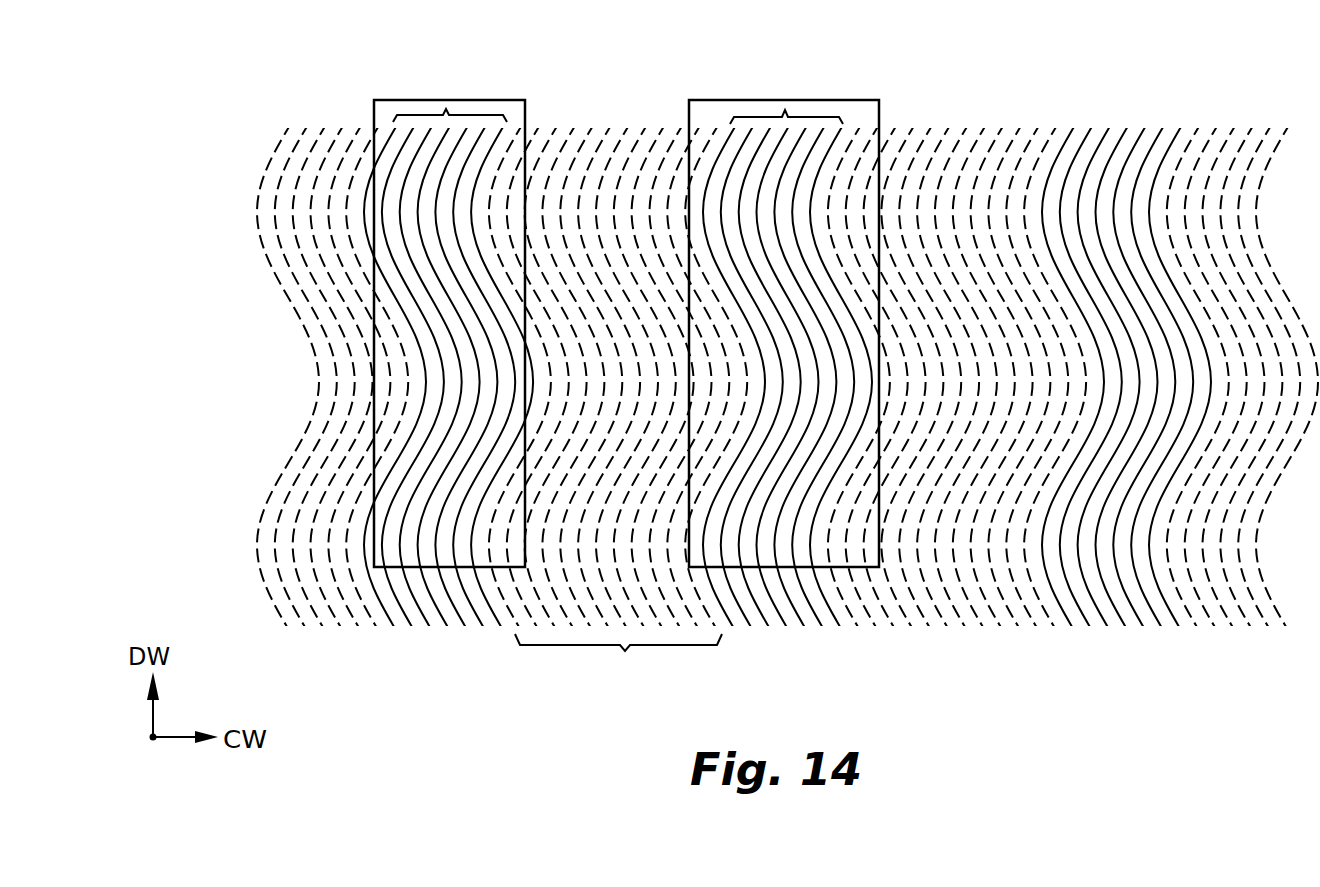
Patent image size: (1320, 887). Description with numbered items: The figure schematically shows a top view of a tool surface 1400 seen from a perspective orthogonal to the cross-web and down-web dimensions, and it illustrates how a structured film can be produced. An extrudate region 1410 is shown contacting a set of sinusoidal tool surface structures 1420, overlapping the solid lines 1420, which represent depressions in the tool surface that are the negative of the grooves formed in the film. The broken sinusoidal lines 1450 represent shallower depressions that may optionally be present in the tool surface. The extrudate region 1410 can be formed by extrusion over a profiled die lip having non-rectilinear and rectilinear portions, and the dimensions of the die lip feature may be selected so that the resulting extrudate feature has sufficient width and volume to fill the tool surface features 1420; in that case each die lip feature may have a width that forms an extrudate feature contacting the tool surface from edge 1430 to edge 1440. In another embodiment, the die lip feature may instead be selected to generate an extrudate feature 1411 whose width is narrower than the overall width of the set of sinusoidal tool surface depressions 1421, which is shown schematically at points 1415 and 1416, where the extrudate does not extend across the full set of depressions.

The tool surface 1400 is at (743, 363).
The extrudate region 1410 is at (722, 108).
The extrudate feature 1411 is at (383, 107).
The point 1415 is at (368, 207).
The point 1416 is at (528, 253).
The sinusoidal tool surface structures 1420 is at (785, 108).
The set of sinusoidal tool surface depressions 1421 is at (445, 110).
The edge 1430 is at (688, 213).
The edge 1440 is at (880, 373).
The broken sinusoidal lines 1450 is at (618, 378).